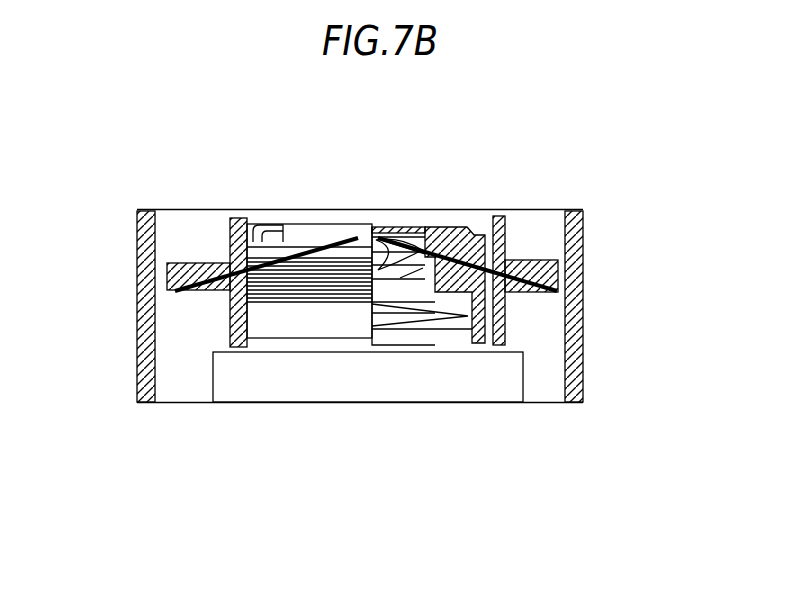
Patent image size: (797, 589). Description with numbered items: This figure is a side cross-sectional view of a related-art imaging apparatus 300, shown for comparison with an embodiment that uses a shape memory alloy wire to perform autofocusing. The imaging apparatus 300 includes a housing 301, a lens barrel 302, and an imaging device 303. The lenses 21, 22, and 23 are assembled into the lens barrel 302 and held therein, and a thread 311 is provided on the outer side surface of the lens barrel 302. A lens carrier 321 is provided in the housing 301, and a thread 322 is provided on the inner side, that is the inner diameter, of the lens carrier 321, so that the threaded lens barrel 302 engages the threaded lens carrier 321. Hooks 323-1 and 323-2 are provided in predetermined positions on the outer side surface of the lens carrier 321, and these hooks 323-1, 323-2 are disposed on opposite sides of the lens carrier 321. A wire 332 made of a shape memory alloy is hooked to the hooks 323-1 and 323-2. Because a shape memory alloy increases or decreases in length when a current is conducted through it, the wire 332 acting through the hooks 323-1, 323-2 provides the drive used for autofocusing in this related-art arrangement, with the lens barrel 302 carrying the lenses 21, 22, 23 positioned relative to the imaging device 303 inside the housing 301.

The imaging apparatus 300 is at (420, 448).
The housing 301 is at (148, 403).
The lens barrel 302 is at (452, 226).
The imaging device 303 is at (315, 403).
The thread 311 is at (268, 226).
The lens carrier 321 is at (228, 216).
The thread 322 is at (254, 222).
The hook 323-1 is at (167, 276).
The hook 323-2 is at (530, 262).
The wire 332 is at (540, 293).
The lens 21 is at (412, 226).
The lens 22 is at (503, 222).
The lens 23 is at (433, 320).